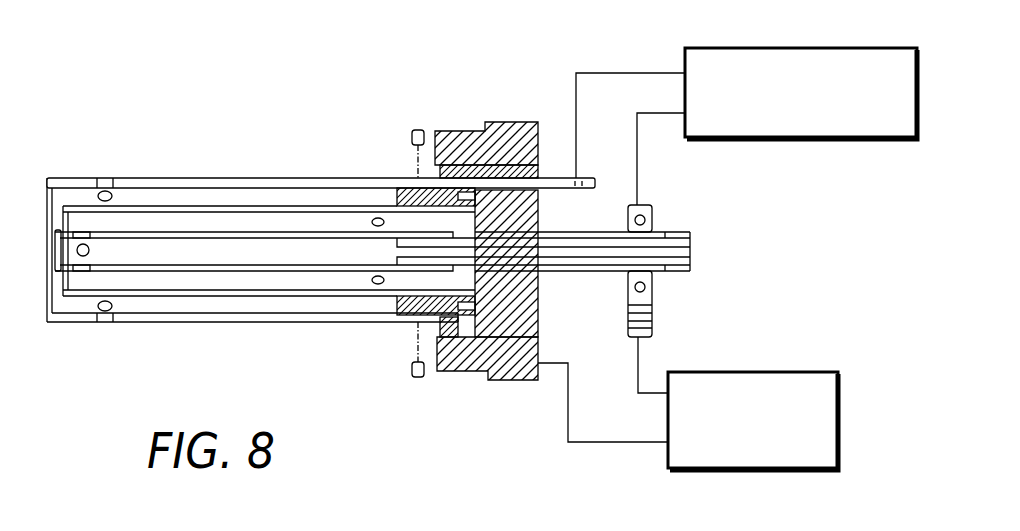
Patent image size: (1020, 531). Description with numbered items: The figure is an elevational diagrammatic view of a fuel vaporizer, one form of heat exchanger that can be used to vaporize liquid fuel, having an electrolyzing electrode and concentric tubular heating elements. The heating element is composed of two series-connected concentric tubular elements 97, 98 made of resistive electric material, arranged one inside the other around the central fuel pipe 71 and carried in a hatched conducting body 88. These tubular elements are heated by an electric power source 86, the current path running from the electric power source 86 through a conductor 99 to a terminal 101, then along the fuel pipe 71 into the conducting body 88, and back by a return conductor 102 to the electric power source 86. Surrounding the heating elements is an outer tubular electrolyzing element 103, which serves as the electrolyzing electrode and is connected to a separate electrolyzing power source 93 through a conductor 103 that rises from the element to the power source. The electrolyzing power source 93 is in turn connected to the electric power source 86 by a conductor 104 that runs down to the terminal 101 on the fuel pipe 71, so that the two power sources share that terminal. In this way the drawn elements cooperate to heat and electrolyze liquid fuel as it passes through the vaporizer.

The fuel pipe 71 is at (692, 258).
The electric power source 86 is at (838, 398).
The conducting body 88 is at (503, 122).
The electrolyzing power source 93 is at (818, 140).
The concentric tubular element 97 is at (188, 296).
The concentric tubular element 98 is at (313, 272).
The conductor 99 is at (637, 373).
The terminal 101 is at (653, 306).
The return conductor 102 is at (582, 445).
The outer tubular electrolyzing element 103 is at (600, 72).
The conductor 104 is at (637, 165).